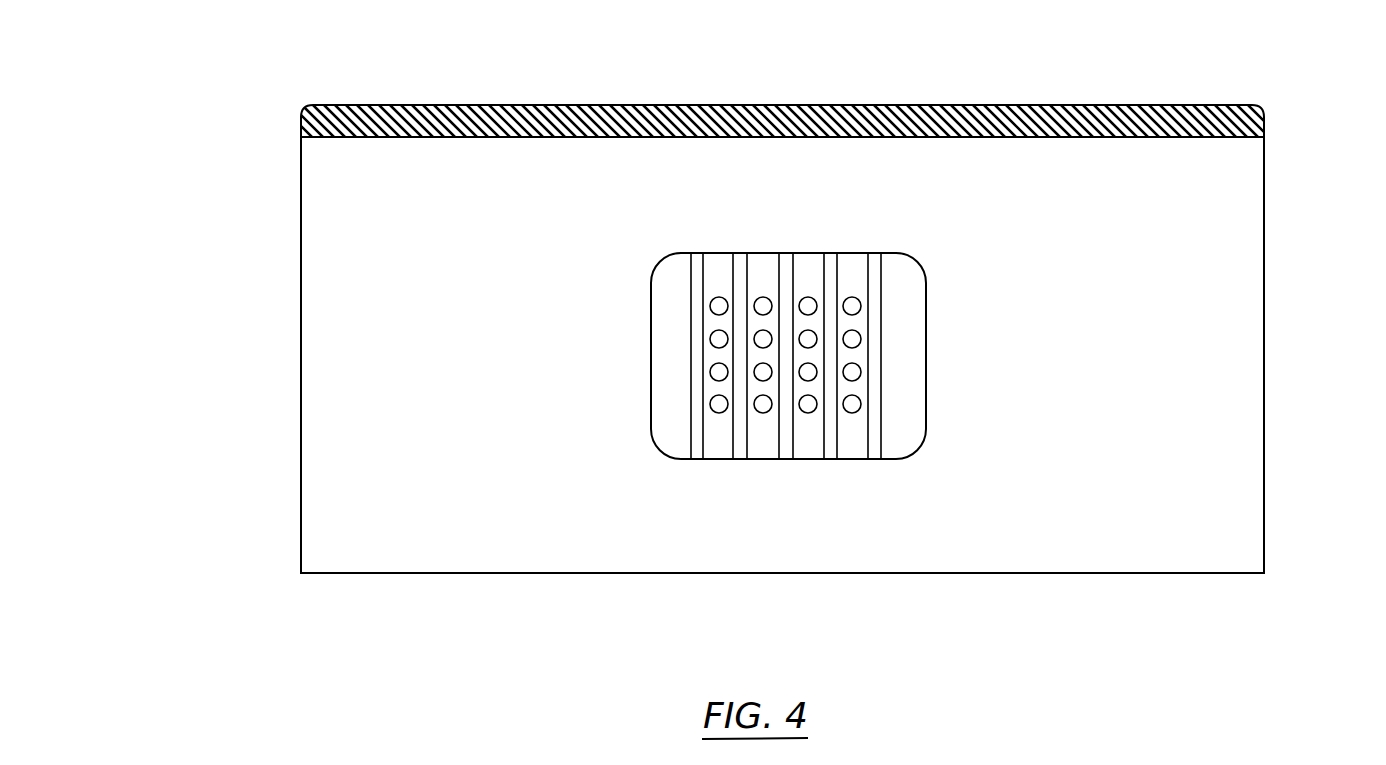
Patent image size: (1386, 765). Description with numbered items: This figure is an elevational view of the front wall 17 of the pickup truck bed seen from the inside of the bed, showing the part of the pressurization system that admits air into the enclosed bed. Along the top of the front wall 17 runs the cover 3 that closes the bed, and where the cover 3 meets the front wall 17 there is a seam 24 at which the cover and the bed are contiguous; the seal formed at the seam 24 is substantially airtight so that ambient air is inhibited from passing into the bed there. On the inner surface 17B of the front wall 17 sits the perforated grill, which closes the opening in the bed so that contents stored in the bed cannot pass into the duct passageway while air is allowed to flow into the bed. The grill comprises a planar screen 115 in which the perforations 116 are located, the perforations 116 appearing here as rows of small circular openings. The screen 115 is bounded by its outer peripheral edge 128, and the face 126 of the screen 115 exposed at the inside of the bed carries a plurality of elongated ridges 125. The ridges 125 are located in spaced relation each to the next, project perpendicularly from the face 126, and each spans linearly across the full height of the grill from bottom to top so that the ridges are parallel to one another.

The cover 3 is at (728, 106).
The front wall 17 is at (1268, 196).
The inner surface of the bed at the front wall 17B is at (1225, 259).
The seams 24 is at (301, 137).
The screen 115 is at (666, 251).
The perforations 116 is at (809, 300).
The elongated ridges 125 is at (740, 452).
The face of the grill screen 126 is at (912, 389).
The outer peripheral edge 128 is at (927, 302).